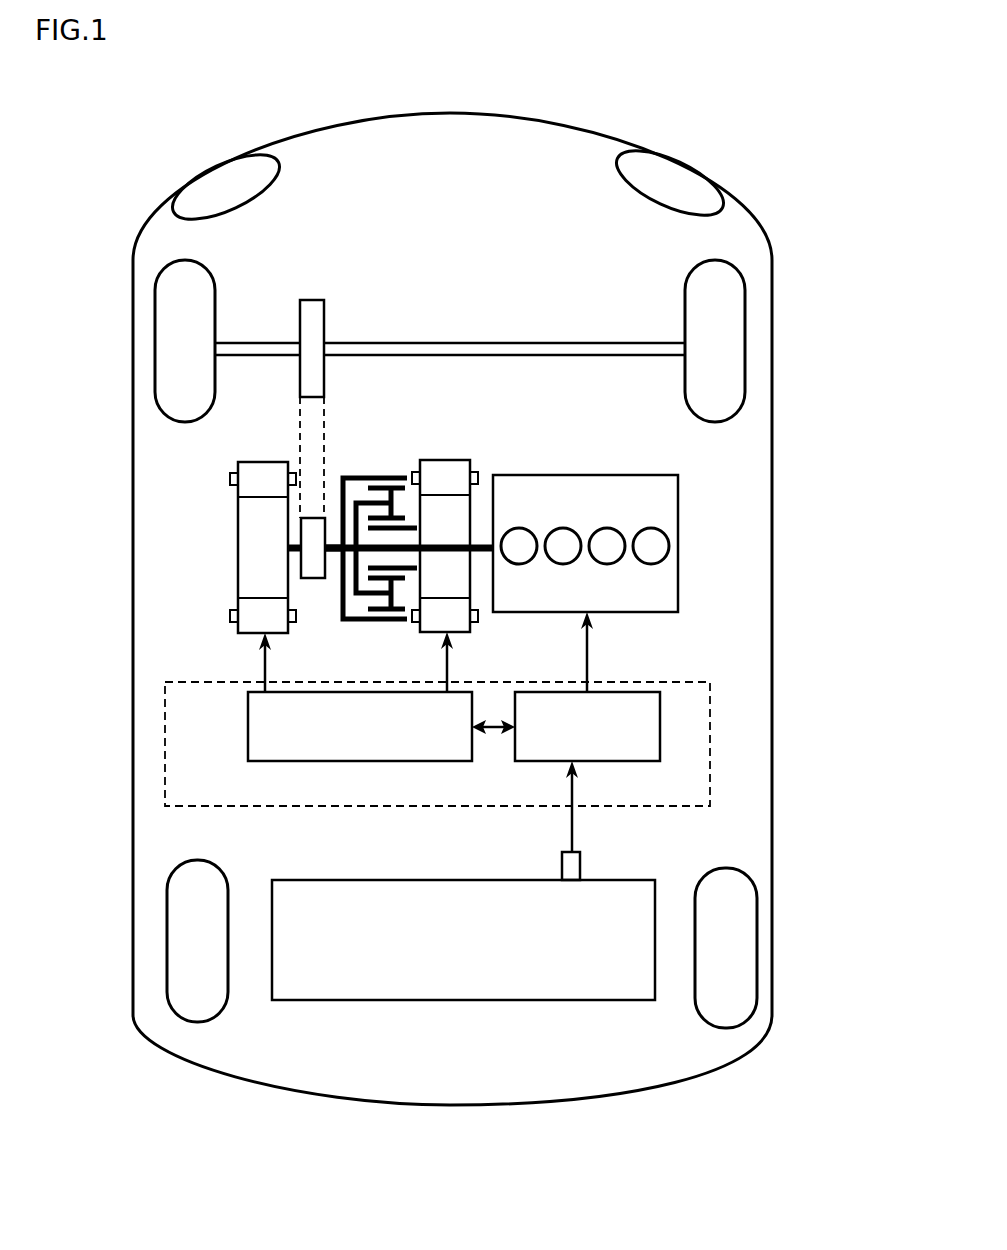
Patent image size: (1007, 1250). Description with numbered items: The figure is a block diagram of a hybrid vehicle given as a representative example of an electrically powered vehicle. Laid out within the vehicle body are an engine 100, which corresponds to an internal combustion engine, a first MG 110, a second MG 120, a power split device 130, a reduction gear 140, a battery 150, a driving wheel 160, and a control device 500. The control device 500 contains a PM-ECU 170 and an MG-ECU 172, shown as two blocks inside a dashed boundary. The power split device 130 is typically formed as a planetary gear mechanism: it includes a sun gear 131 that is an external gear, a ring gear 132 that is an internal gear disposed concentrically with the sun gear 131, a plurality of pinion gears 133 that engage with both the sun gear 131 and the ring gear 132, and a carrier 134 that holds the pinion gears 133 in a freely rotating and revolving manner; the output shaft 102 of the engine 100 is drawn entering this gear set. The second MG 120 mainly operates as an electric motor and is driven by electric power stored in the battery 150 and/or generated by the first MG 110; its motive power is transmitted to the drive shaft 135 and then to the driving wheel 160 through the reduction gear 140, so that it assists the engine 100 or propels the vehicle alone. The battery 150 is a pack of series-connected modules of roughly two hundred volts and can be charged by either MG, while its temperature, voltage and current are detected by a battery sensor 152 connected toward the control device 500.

The engine 100 is at (553, 475).
The output shaft 102 is at (480, 553).
The first MG 110 is at (445, 460).
The second MG 120 is at (238, 547).
The power split device 130 is at (379, 361).
The sun gear 131 is at (412, 522).
The ring gear 132 is at (355, 477).
The pinion gears 133 is at (392, 606).
The carrier 134 is at (362, 594).
The drive shaft 135 is at (336, 556).
The reduction gear 140 is at (315, 270).
The battery 150 is at (372, 1000).
The battery sensor 152 is at (562, 866).
The driving wheel 160 is at (155, 376).
The PM-ECU 170 is at (660, 727).
The MG-ECU 172 is at (248, 728).
The control device 500 is at (451, 719).